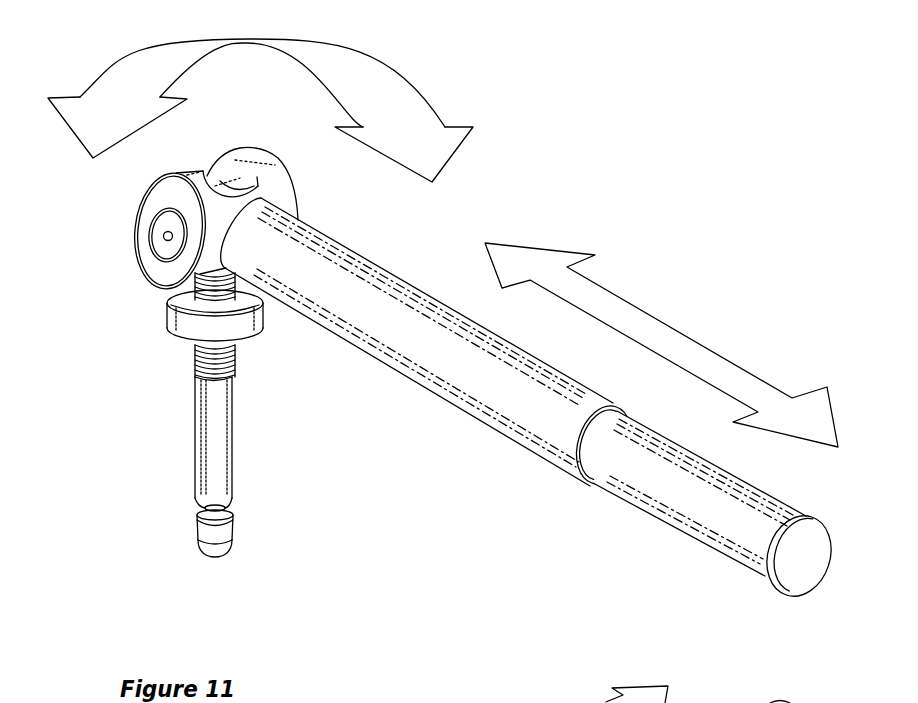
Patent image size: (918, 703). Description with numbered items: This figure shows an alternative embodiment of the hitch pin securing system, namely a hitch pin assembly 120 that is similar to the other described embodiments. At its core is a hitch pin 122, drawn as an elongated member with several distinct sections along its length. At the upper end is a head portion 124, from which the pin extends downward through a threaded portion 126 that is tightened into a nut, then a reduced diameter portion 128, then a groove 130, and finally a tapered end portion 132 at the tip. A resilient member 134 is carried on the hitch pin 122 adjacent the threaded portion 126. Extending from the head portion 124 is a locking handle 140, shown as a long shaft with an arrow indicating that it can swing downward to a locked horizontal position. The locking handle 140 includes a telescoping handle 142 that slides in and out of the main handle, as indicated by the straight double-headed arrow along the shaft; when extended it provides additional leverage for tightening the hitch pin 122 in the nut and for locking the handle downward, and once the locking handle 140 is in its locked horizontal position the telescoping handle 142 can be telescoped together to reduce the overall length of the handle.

The hitch pin assembly 120 is at (458, 238).
The hitch pin 122 is at (148, 403).
The head portion 124 is at (168, 247).
The threaded portion 126 is at (198, 375).
The reduced diameter portion 128 is at (198, 480).
The groove 130 is at (243, 515).
The tapered end portion 132 is at (226, 558).
The resilient member 134 is at (243, 323).
The locking handle 140 is at (513, 443).
The telescoping handle 142 is at (660, 513).